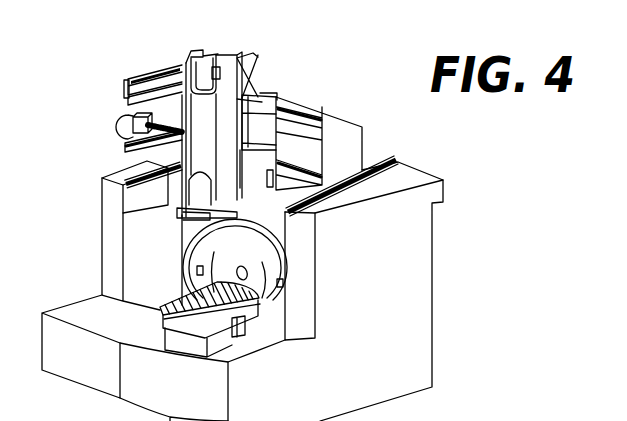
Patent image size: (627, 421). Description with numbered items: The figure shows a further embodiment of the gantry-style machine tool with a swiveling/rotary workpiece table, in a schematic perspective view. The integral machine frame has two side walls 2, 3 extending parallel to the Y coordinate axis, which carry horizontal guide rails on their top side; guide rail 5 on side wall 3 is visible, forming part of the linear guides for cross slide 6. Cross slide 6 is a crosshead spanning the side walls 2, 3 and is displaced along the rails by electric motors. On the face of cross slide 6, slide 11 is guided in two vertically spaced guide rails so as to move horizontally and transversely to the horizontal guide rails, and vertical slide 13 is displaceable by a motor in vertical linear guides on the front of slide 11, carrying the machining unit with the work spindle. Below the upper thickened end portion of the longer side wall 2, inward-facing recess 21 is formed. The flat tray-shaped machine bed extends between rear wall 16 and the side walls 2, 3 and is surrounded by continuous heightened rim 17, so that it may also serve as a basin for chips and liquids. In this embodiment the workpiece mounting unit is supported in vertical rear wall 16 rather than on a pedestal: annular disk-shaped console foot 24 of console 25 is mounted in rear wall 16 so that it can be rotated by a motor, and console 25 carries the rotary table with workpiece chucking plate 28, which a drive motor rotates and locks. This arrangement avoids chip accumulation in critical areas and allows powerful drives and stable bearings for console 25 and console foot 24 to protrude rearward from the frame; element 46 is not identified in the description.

The side wall 2 is at (110, 262).
The side wall 3 is at (373, 323).
The horizontal guide rail 5 is at (394, 166).
The cross slide 6 is at (348, 140).
The slide 11 is at (261, 140).
The vertical slide 13 is at (258, 90).
The rear wall 16 is at (316, 220).
The heightened rim 17 is at (199, 401).
The recess 21 is at (130, 212).
The console foot 24 is at (193, 252).
The console 25 is at (253, 257).
The workpiece chucking plate 28 is at (262, 330).
The pillar 46 is at (312, 232).